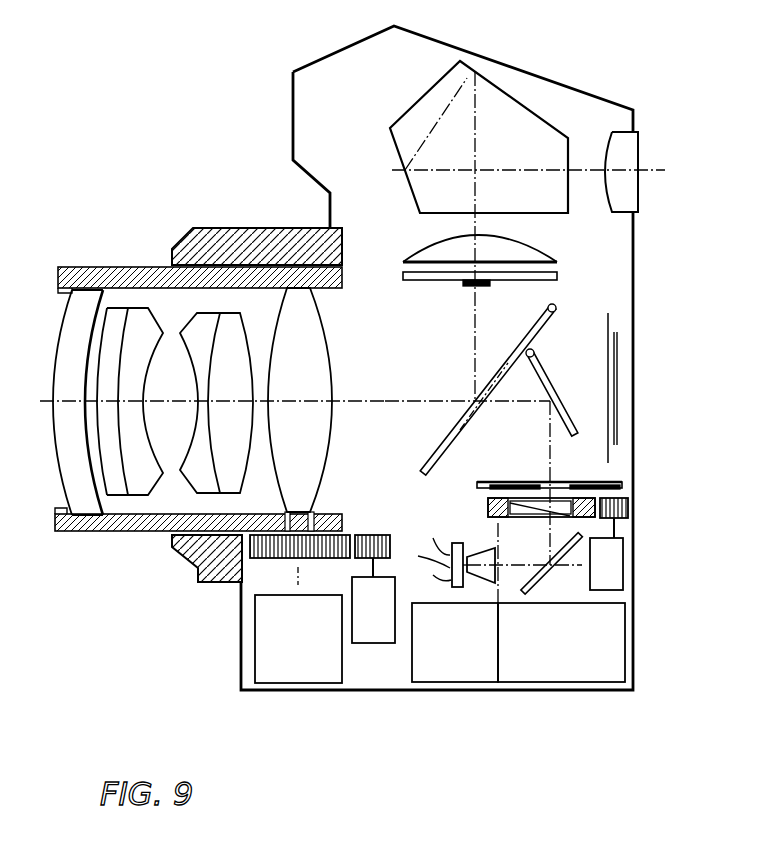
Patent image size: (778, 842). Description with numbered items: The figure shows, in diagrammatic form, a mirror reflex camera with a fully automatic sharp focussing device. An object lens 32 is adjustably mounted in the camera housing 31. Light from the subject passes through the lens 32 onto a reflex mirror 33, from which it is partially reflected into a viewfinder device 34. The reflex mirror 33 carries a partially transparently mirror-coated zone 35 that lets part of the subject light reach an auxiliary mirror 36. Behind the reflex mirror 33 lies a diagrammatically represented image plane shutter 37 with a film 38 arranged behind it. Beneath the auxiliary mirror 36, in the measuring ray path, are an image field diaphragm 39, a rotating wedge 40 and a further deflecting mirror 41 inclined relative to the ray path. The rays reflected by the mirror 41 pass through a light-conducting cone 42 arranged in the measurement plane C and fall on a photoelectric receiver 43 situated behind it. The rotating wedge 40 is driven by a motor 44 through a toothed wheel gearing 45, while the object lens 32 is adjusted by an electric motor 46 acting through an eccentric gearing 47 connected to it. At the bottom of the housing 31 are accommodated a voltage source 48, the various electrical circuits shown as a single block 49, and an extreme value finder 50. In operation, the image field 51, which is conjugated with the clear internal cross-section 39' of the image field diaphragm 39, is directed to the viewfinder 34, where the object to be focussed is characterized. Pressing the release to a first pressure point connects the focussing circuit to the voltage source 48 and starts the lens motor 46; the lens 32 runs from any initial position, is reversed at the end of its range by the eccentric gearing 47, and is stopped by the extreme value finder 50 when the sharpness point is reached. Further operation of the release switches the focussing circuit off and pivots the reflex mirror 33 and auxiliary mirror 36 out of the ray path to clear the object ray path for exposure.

The camera housing 31 is at (320, 75).
The object lens 32 is at (100, 280).
The reflex mirror 33 is at (430, 463).
The viewfinder device 34 is at (553, 195).
The partially transparently mirror-coated zone 35 is at (495, 377).
The auxiliary mirror 36 is at (543, 378).
The image plane shutter 37 is at (612, 317).
The film 38 is at (617, 357).
The image field diaphragm 39 is at (579, 483).
The clear internal cross-section 39' is at (578, 470).
The rotating wedge 40 is at (502, 512).
The deflecting mirror 41 is at (567, 558).
The light-conducting cone 42 is at (473, 562).
The measurement plane C is at (493, 551).
The photoelectric receiver 43 is at (453, 580).
The motor 44 is at (613, 547).
The toothed wheel gearing 45 is at (628, 508).
The electric motor 46 is at (373, 589).
The eccentric gearing 47 is at (288, 535).
The voltage source 48 is at (561, 642).
The electrical circuits block 49 is at (455, 642).
The extreme value finder 50 is at (298, 639).
The image field 51 is at (473, 287).